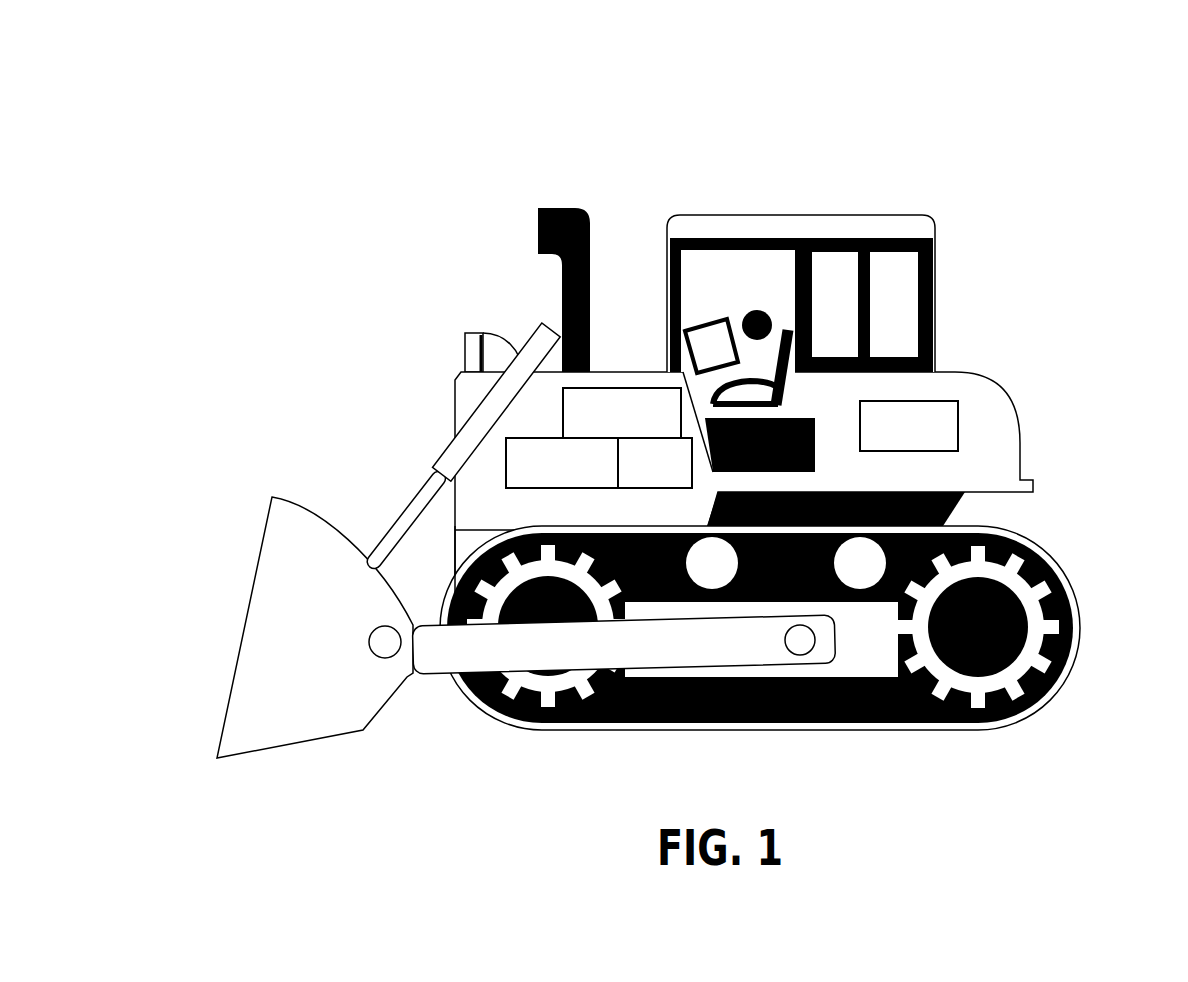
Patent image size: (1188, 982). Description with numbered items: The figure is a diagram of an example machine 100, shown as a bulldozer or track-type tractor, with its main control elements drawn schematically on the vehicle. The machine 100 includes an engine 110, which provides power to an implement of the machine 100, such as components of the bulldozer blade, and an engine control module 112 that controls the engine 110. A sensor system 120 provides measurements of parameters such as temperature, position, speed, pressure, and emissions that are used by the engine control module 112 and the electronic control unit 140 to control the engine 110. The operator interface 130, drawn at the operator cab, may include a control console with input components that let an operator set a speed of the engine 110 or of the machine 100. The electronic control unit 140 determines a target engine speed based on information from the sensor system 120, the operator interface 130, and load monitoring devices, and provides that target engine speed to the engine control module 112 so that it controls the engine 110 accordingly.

The machine 100 is at (651, 407).
The engine 110 is at (585, 474).
The engine control module 112 is at (675, 474).
The sensor system 120 is at (622, 413).
The operator interface 130 is at (742, 270).
The electronic control unit 140 is at (960, 425).